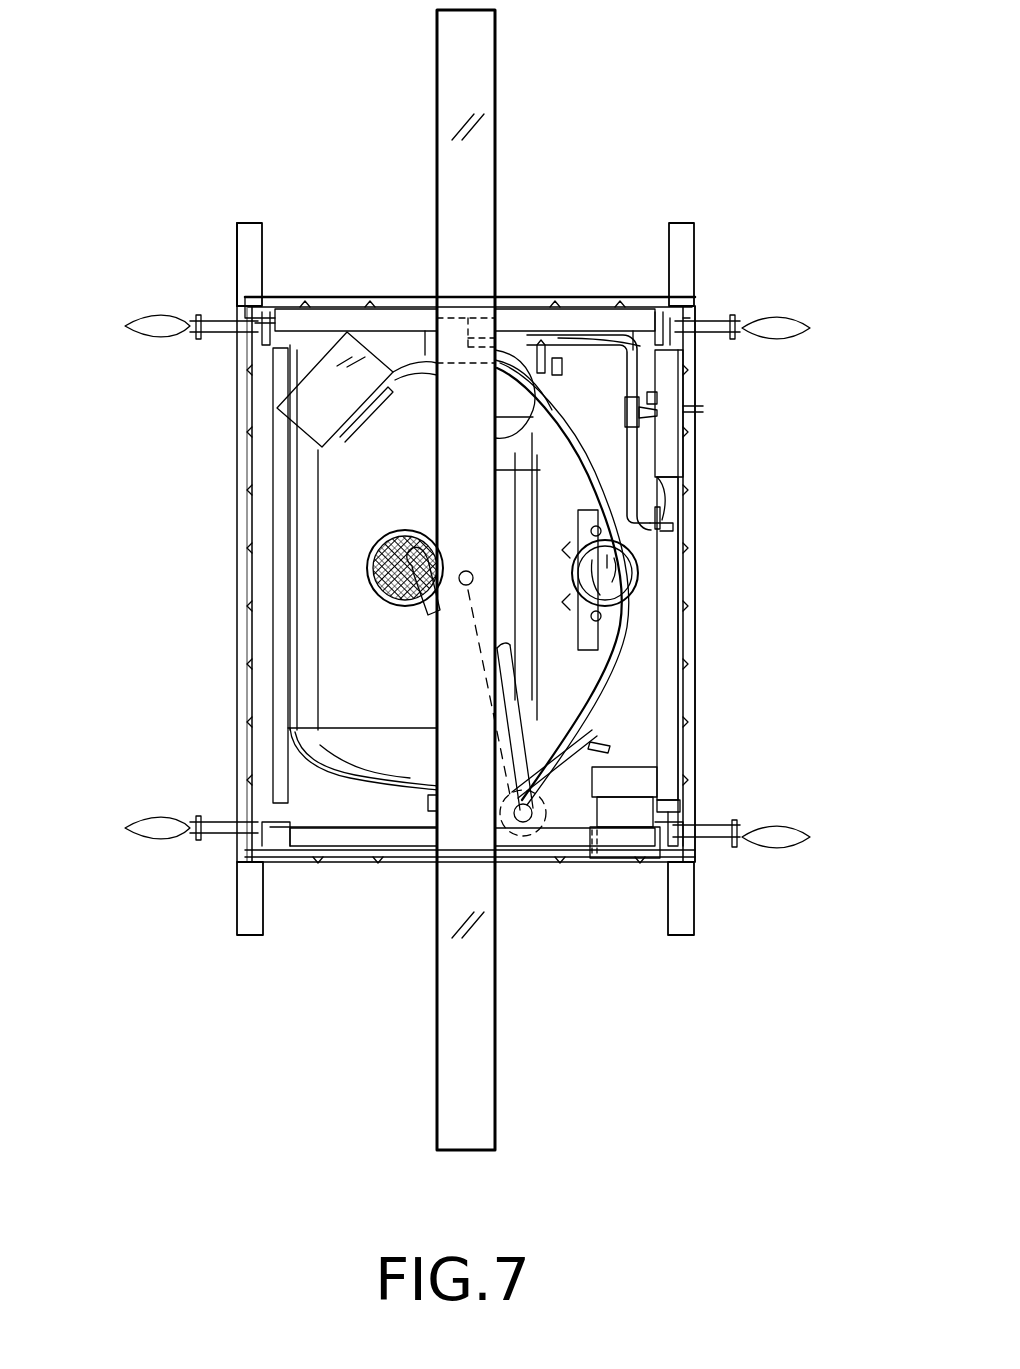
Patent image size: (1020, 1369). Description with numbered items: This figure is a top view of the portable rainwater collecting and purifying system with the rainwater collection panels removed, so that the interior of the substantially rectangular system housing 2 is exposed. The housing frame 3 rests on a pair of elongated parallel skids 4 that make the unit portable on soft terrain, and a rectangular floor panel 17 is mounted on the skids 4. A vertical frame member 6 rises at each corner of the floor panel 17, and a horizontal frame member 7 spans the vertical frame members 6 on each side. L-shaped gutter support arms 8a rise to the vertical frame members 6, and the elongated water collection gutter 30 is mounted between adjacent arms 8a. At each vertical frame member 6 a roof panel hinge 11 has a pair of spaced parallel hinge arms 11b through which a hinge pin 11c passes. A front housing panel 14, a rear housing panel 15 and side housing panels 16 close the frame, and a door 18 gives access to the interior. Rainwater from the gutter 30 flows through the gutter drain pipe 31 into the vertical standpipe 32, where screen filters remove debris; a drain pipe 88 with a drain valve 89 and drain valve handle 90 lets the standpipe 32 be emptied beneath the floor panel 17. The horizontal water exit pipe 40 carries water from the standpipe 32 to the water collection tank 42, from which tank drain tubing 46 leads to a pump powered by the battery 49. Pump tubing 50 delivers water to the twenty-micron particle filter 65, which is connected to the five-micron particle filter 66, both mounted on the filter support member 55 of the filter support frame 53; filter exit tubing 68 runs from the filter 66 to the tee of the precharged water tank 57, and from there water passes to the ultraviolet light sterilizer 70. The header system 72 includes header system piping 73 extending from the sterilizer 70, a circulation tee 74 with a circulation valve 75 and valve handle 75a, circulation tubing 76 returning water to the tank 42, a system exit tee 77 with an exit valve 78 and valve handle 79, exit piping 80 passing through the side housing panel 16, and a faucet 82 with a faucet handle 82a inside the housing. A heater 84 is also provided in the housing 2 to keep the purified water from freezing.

The system housing 2 is at (232, 888).
The housing frame 3 is at (232, 258).
The skids 4 is at (250, 232).
The vertical frame member 6 is at (336, 326).
The horizontal frame member 7 is at (265, 522).
The gutter support arm 8a is at (390, 318).
The roof panel hinge 11 is at (468, 608).
The hinge arm 11b is at (468, 584).
The hinge pin 11c is at (477, 562).
The front housing panel 14 is at (405, 868).
The rear housing panel 15 is at (292, 310).
The side housing panel 16 is at (265, 588).
The floor panel 17 is at (322, 550).
The door 18 is at (688, 620).
The water collection gutter 30 is at (468, 58).
The gutter drain pipe 31 is at (512, 772).
The standpipe 32 is at (512, 838).
The water exit pipe 40 is at (425, 612).
The water collection tank 42 is at (288, 487).
The tank drain tubing 46 is at (426, 798).
The battery 49 is at (700, 800).
The pump tubing 50 is at (570, 735).
The filter support frame 53 is at (570, 528).
The filter support member 55 is at (590, 515).
The precharged water tank 57 is at (395, 598).
The 20-micron particle filter 65 is at (575, 603).
The 5-micron particle filter 66 is at (575, 550).
The filter exit tubing 68 is at (575, 450).
The ultraviolet light sterilizer 70 is at (462, 340).
The header system 72 is at (660, 492).
The header system piping 73 is at (640, 372).
The circulation tee 74 is at (536, 338).
The circulation valve 75 is at (510, 368).
The valve handle 75a is at (555, 362).
The circulation tubing 76 is at (500, 440).
The system exit tee 77 is at (628, 414).
The exit valve 78 is at (660, 445).
The valve handle 79 is at (665, 400).
The exit piping 80 is at (700, 410).
The faucet 82 is at (670, 528).
The faucet handle 82a is at (668, 520).
The heater 84 is at (357, 389).
The drain pipe 88 is at (580, 768).
The drain valve 89 is at (590, 732).
The drain valve handle 90 is at (604, 750).